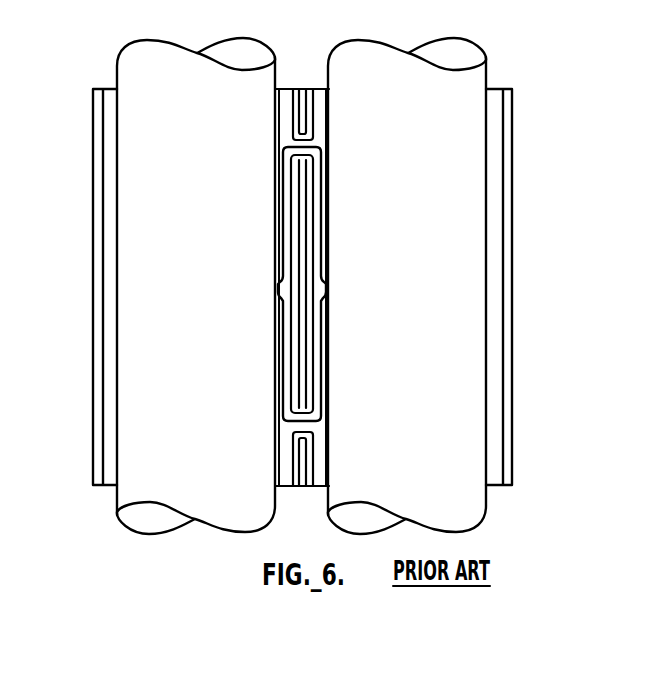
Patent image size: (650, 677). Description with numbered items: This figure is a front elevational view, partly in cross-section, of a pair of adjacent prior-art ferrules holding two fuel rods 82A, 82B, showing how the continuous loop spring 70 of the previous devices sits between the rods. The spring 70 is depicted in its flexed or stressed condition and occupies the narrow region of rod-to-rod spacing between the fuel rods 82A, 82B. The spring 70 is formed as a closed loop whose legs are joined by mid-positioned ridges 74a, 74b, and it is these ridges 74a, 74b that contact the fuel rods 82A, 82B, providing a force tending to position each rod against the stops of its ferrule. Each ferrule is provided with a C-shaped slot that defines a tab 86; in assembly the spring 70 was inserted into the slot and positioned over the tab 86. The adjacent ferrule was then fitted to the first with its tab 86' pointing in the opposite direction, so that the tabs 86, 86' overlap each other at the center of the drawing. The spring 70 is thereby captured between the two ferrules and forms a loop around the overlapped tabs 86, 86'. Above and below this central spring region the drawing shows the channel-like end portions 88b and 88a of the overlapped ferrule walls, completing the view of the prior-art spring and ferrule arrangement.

The continuous loop spring 70 is at (321, 189).
The mid-positioned ridge 74a is at (277, 286).
The mid-positioned ridge 74b is at (326, 287).
The fuel rod 82A is at (129, 493).
The fuel rod 82B is at (486, 503).
The tab 86 is at (332, 284).
The tab 86' is at (330, 284).
The lower end channel 88a is at (313, 428).
The upper end channel 88b is at (321, 92).